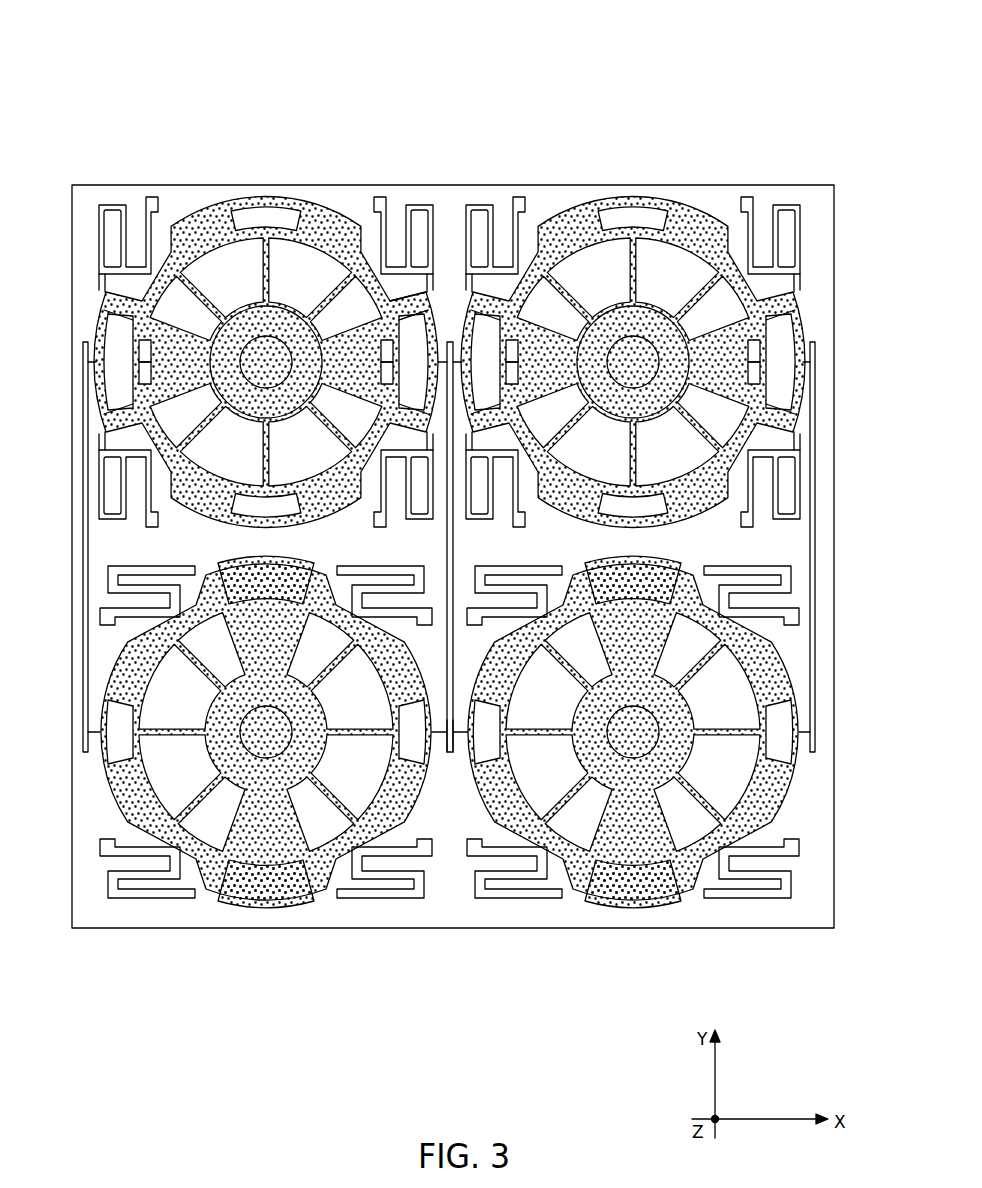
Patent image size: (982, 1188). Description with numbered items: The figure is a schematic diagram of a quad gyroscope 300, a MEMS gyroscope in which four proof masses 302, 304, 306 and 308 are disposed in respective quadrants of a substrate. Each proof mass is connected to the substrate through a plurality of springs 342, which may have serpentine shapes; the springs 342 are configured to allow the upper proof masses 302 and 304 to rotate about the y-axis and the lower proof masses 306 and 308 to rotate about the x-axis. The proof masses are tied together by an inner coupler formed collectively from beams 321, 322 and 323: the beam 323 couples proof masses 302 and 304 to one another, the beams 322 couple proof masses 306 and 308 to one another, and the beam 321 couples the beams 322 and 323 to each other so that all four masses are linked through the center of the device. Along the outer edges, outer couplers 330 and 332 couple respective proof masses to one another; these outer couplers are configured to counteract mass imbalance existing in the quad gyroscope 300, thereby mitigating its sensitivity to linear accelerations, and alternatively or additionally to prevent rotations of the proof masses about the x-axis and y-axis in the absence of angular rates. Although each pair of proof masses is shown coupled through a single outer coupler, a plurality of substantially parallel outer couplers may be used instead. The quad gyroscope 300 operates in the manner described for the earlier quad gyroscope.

The quad gyroscope 300 is at (167, 79).
The proof mass 302 is at (259, 318).
The proof mass 304 is at (697, 183).
The proof mass 306 is at (249, 943).
The proof mass 308 is at (697, 940).
The beam 321 is at (454, 558).
The beam 322 is at (453, 757).
The beam 323 is at (420, 297).
The outer coupler 330 is at (83, 530).
The outer coupler 332 is at (816, 540).
The spring 342 is at (108, 203).